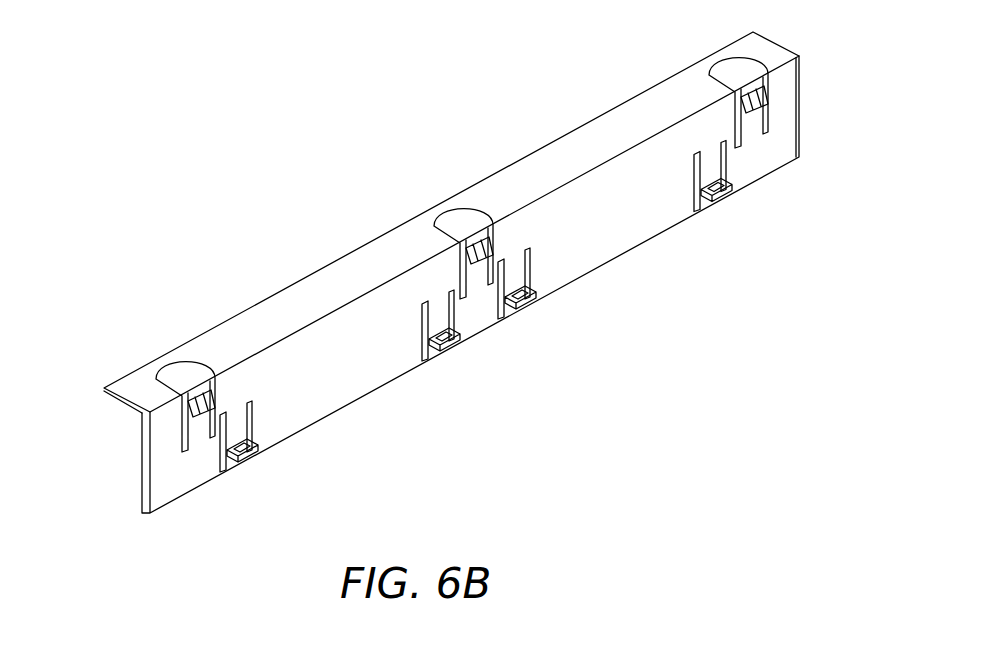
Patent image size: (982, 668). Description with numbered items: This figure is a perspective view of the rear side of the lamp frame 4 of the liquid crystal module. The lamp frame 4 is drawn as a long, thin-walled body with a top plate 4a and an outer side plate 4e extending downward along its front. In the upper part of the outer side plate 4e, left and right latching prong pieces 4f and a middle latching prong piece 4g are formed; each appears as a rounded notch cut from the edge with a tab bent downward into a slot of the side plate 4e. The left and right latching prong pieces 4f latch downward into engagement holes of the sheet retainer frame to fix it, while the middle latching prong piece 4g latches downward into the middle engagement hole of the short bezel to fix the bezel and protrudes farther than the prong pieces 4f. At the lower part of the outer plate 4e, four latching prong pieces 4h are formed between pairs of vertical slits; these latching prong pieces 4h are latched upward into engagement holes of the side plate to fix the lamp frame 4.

The lamp frame 4 is at (507, 126).
The top plate 4a is at (307, 293).
The outer side plate 4e is at (345, 388).
The left and right latching prong pieces 4f is at (214, 396).
The middle latching prong piece 4g is at (495, 243).
The latching prong pieces 4h is at (248, 457).